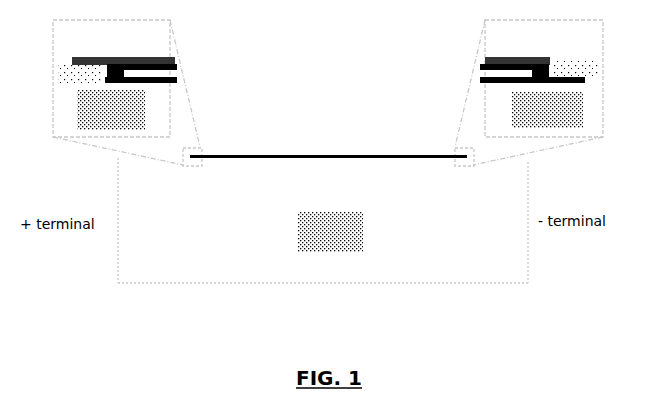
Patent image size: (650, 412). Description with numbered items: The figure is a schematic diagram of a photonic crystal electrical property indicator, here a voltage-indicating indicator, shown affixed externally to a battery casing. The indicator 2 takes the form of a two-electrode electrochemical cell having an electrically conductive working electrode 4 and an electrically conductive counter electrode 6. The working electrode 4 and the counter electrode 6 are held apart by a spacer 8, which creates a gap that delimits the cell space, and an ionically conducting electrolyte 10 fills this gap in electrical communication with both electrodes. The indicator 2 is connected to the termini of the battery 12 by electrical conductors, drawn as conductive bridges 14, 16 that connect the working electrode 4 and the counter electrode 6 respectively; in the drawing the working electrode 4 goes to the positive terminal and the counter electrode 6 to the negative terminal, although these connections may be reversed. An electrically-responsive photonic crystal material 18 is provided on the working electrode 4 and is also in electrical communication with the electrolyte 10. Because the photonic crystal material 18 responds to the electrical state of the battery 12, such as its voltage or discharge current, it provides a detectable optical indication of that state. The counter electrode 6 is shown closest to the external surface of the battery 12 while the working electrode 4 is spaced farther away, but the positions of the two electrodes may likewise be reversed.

The indicator 2 is at (327, 149).
The working electrode 4 is at (178, 62).
The counter electrode 6 is at (182, 80).
The spacer 8 is at (175, 53).
The electrolyte 10 is at (143, 74).
The battery 12 is at (330, 171).
The conductive bridge 14 is at (103, 78).
The conductive bridge 16 is at (604, 72).
The photonic crystal material 18 is at (180, 64).